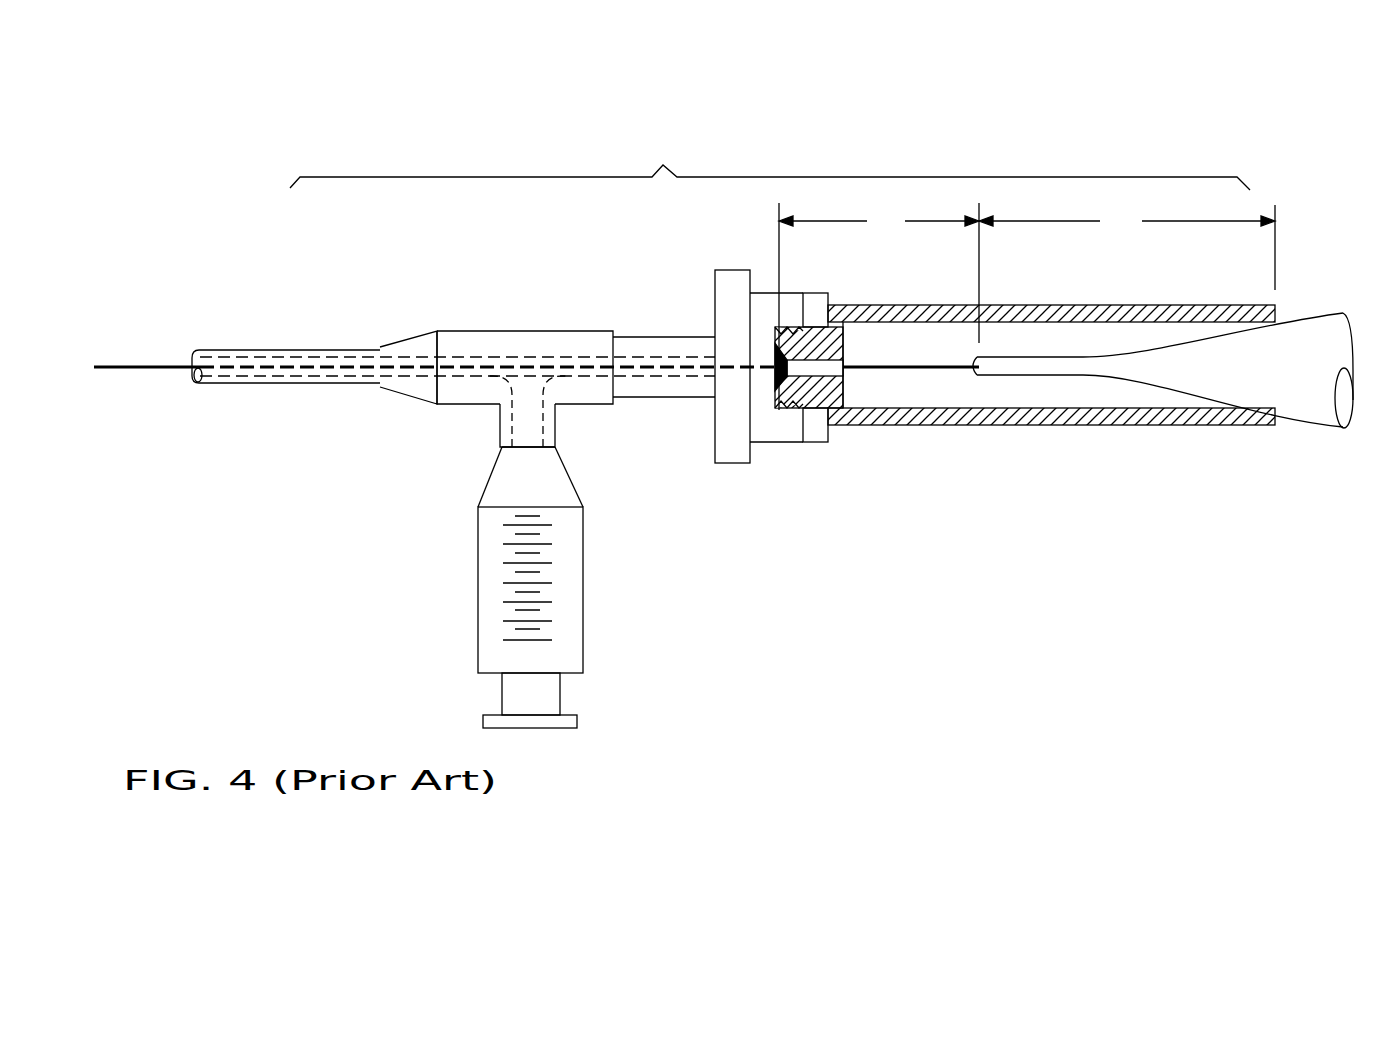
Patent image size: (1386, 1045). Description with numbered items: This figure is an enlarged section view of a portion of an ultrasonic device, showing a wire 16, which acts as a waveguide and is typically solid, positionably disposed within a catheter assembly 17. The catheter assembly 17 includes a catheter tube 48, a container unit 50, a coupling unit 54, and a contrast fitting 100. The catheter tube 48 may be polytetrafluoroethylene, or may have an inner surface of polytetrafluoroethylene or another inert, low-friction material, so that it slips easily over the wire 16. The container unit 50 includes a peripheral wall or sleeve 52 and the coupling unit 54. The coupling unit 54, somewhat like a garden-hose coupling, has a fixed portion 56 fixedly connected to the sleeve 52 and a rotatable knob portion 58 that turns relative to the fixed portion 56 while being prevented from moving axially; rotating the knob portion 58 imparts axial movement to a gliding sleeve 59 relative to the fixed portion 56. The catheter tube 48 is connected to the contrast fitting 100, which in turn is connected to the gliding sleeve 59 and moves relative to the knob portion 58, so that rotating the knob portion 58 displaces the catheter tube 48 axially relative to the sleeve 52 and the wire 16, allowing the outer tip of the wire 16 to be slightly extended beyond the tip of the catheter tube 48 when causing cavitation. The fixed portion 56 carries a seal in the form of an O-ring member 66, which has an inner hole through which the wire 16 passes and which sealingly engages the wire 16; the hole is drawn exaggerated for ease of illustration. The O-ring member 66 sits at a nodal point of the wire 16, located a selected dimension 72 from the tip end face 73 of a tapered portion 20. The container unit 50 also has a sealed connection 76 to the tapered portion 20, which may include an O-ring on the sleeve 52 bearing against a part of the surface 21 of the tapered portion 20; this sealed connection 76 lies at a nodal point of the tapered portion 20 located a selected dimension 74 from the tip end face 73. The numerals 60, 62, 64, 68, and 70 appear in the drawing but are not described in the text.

The wire 16 is at (157, 368).
The catheter assembly 17 is at (665, 165).
The tapered portion 20 is at (1296, 380).
The surface 21 is at (1135, 385).
The catheter tube 48 is at (296, 338).
The container unit 50 is at (1063, 305).
The sleeve 52 is at (1170, 305).
The coupling unit 54 is at (733, 485).
The fixed portion 56 is at (808, 432).
The knob portion 58 is at (727, 270).
The gliding sleeve 59 is at (673, 400).
The side port 60 is at (523, 424).
The syringe 62 is at (480, 655).
The upper locking block 64 is at (785, 350).
The O-ring member 66 is at (795, 332).
The Y-connector body 68 is at (565, 357).
The sheath lumen 70 is at (907, 347).
The selected dimension 72 is at (879, 273).
The tip end face 73 is at (975, 374).
The selected dimension 74 is at (1127, 247).
The sealed connection 76 is at (1280, 320).
The contrast fitting 100 is at (490, 325).